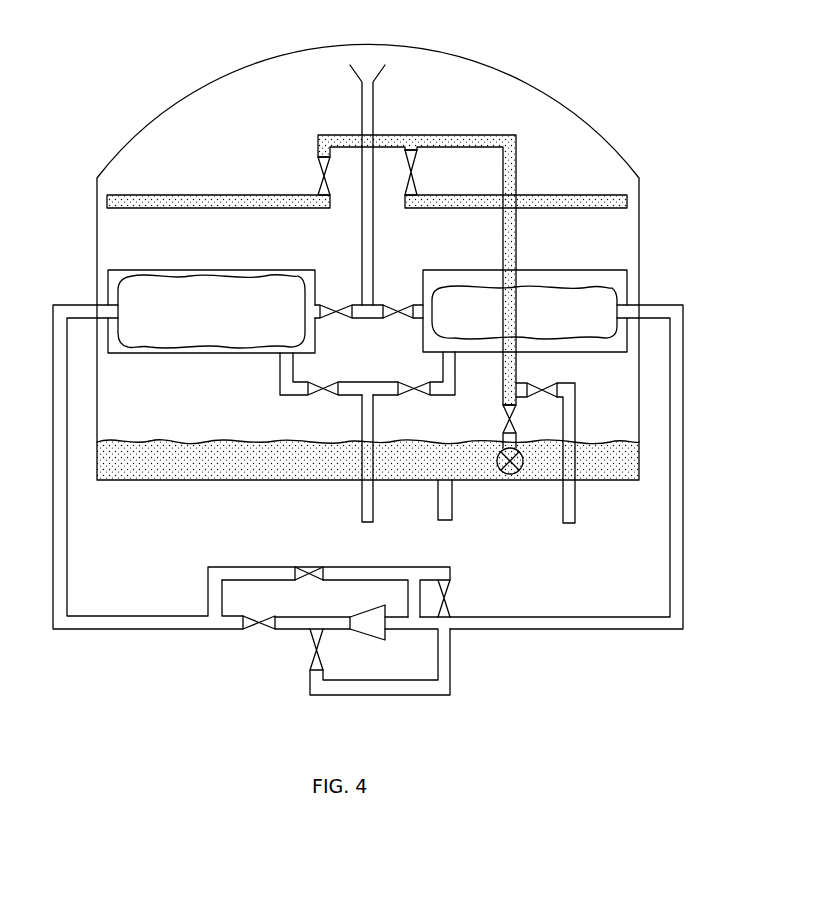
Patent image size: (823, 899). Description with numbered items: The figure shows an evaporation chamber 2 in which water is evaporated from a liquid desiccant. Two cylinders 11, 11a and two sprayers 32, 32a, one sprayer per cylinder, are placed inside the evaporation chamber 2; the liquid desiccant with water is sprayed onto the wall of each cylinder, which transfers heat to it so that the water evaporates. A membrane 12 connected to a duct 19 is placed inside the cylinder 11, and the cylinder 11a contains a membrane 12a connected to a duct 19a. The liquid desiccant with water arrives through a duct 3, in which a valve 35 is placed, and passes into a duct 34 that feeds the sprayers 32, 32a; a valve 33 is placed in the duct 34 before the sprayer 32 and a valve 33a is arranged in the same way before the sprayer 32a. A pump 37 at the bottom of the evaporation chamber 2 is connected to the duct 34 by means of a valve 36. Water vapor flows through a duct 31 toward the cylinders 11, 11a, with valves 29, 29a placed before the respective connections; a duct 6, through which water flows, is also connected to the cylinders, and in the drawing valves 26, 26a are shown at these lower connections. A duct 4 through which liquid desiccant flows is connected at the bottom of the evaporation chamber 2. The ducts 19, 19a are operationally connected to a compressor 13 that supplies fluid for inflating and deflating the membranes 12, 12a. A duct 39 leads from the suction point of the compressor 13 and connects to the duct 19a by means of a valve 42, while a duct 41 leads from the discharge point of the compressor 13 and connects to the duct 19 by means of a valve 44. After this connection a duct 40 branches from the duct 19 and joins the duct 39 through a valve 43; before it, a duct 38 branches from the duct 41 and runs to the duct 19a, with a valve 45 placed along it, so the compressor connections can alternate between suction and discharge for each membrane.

The evaporation chamber 2 is at (582, 52).
The duct 3 is at (576, 514).
The duct 4 is at (452, 508).
The duct 6 is at (360, 487).
The cylinder 11 is at (170, 270).
The cylinder 11a is at (600, 270).
The membrane 12 is at (108, 302).
The membrane 12a is at (617, 300).
The compressor 13 is at (350, 634).
The duct 19 is at (67, 545).
The duct 19a is at (683, 455).
The first drain valve 26 is at (328, 385).
The second drain valve 26a is at (422, 386).
The valve 29 is at (345, 303).
The valve 29a is at (402, 303).
The duct 31 is at (374, 106).
The sprayer 32 is at (185, 195).
The sprayer 32a is at (547, 195).
The valve 33 is at (320, 175).
The valve 33a is at (418, 174).
The duct 34 is at (454, 135).
The valve 35 is at (546, 398).
The valve 36 is at (506, 424).
The pump 37 is at (510, 474).
The duct 38 is at (455, 676).
The duct 39 is at (420, 567).
The duct 40 is at (252, 567).
The duct 41 is at (292, 622).
The valve 42 is at (452, 598).
The valve 43 is at (310, 567).
The valve 44 is at (262, 625).
The valve 45 is at (312, 655).